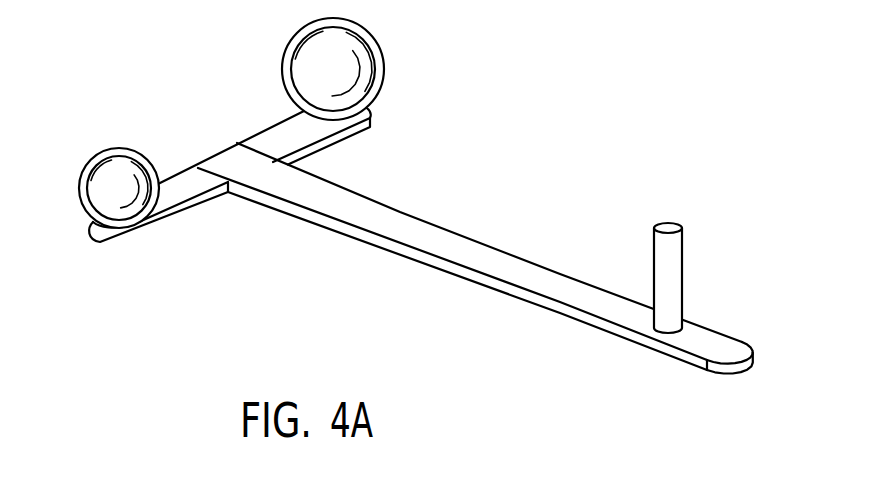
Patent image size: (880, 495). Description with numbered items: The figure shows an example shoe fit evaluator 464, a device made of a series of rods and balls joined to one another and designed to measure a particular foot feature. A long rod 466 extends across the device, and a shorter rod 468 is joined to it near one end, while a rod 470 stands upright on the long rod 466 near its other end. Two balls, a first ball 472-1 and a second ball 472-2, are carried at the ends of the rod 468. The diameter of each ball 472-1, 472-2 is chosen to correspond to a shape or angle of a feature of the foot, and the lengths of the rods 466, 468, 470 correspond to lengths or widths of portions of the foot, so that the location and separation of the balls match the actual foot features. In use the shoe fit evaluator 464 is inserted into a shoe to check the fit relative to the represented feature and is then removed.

The shoe fit evaluator 464 is at (658, 105).
The rod 466 is at (443, 230).
The rod 468 is at (237, 143).
The rod 470 is at (670, 300).
The ball 472-1 is at (83, 207).
The ball 472-2 is at (383, 90).